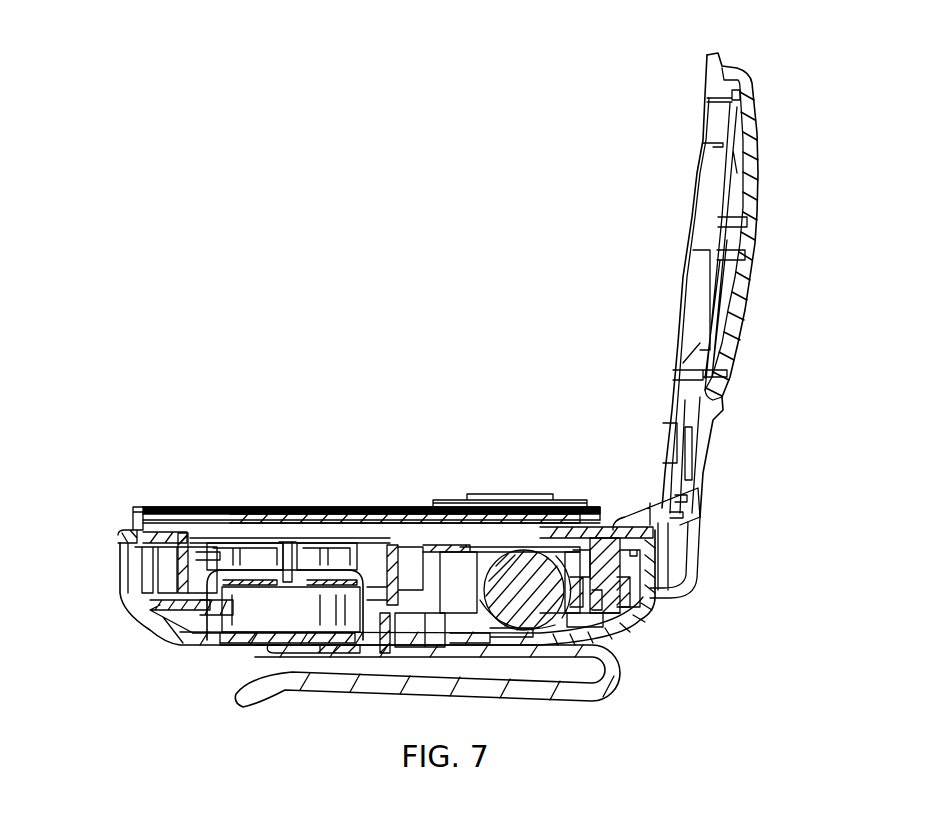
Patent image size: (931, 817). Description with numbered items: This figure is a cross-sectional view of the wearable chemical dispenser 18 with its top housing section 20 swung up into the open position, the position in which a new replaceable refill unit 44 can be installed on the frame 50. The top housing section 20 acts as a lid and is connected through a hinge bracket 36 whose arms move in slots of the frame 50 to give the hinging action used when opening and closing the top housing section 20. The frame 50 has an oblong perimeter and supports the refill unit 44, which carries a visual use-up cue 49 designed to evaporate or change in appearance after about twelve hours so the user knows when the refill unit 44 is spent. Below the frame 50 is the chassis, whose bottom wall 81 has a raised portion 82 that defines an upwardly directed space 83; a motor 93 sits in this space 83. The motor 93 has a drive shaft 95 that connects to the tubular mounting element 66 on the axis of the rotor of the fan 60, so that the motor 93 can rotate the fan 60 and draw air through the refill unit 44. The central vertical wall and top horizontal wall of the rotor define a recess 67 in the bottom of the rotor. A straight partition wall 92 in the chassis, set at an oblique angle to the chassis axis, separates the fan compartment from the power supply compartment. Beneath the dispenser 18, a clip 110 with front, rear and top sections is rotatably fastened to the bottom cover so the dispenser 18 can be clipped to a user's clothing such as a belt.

The wearable chemical dispenser 18 is at (719, 668).
The top housing section 20 is at (740, 73).
The hinge bracket 36 is at (641, 493).
The replaceable refill unit 44 is at (190, 500).
The visual use-up cue 49 is at (517, 500).
The frame 50 is at (413, 523).
The fan 60 is at (172, 560).
The tubular mounting element 66 is at (300, 575).
The recess 67 is at (222, 592).
The bottom wall 81 is at (218, 640).
The raised portion 82 is at (250, 583).
The space 83 is at (228, 632).
The partition wall 92 is at (472, 582).
The motor 93 is at (288, 618).
The drive shaft 95 is at (287, 557).
The clip 110 is at (595, 698).